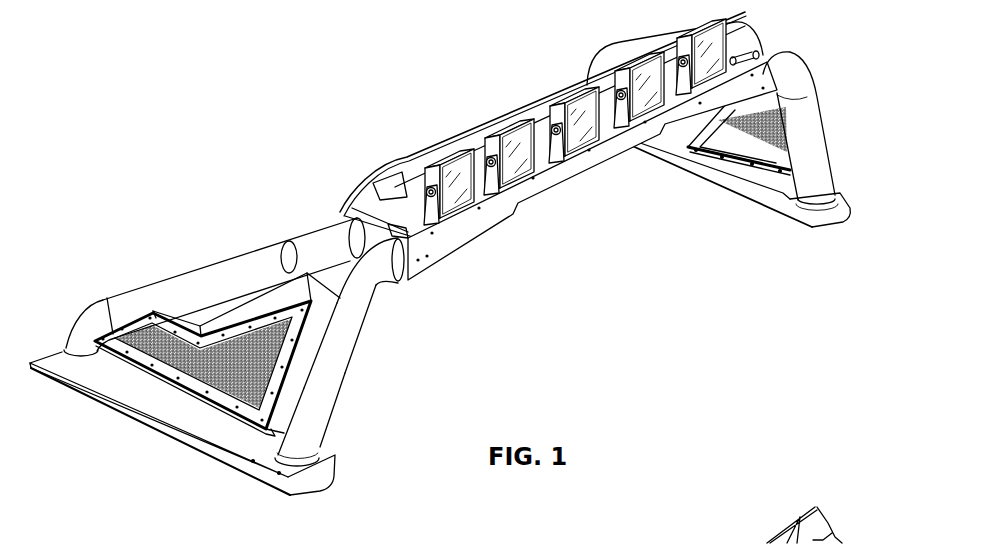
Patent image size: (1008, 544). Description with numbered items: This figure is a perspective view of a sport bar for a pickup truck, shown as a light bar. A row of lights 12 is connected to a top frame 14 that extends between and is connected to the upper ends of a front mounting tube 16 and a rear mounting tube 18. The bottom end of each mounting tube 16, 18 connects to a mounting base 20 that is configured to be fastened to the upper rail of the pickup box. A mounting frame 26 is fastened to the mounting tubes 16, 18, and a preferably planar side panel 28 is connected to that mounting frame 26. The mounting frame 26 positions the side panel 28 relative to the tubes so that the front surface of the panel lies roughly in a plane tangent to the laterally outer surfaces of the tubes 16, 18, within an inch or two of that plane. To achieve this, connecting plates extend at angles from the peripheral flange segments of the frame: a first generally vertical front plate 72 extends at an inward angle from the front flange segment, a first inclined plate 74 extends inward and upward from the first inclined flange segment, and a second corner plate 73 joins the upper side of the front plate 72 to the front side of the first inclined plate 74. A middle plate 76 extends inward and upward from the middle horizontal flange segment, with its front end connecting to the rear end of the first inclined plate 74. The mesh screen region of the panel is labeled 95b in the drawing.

The lights 12 is at (451, 199).
The top frame 14 is at (578, 171).
The front mounting tube 16 is at (376, 300).
The rear mounting tube 18 is at (307, 237).
The mounting base 20 is at (231, 476).
The mounting frame 26 is at (194, 407).
The side panel 28 is at (325, 434).
The first generally vertical front plate 72 is at (297, 383).
The second corner plate 73 is at (320, 296).
The first inclined plate 74 is at (258, 300).
The middle plate 76 is at (182, 317).
The mesh screen 95b is at (126, 352).